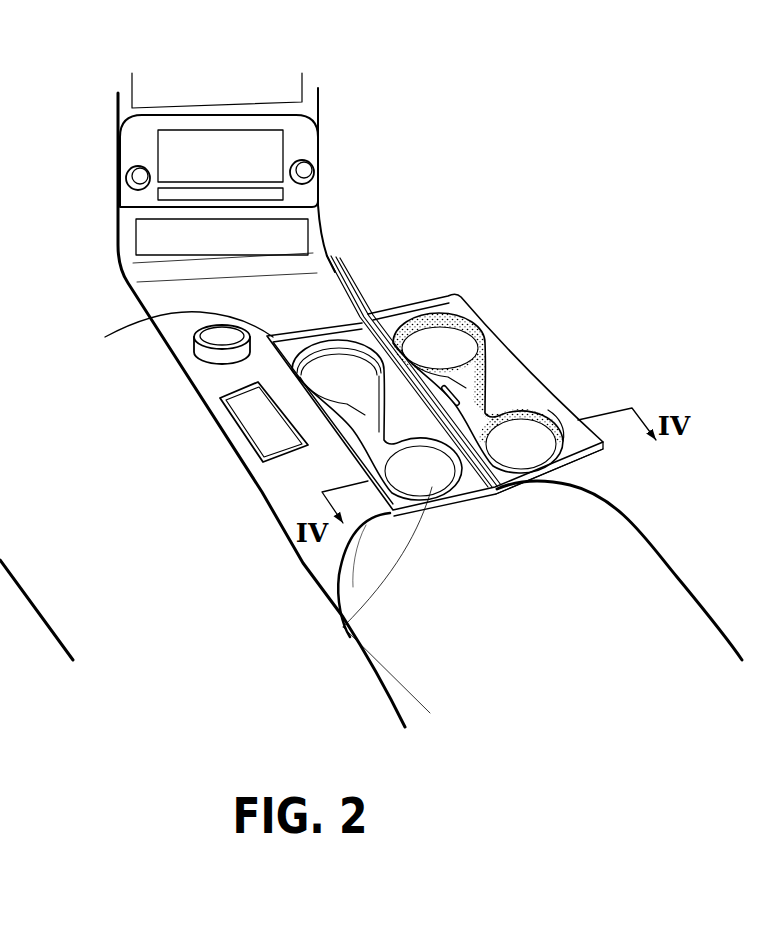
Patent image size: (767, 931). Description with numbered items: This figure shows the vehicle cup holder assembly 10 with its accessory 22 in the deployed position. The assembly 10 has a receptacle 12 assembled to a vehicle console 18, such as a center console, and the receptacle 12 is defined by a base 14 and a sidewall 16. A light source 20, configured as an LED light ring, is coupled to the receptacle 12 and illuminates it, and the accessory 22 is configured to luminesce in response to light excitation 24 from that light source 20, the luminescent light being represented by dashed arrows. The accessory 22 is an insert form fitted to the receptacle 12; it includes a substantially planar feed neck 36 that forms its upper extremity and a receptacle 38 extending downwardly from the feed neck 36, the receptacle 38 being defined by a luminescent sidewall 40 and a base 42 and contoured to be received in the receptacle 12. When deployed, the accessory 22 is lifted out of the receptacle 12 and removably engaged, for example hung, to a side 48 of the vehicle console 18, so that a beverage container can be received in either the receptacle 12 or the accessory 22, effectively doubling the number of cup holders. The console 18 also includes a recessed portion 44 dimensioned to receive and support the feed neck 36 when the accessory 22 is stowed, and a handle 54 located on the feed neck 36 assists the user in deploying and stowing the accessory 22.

The vehicle cup holder assembly 10 is at (556, 321).
The receptacle 12 is at (306, 329).
The base 14 is at (360, 415).
The sidewall 16 is at (367, 312).
The vehicle console 18 is at (183, 338).
The light source 20 is at (358, 410).
The accessory 22 is at (551, 362).
The light excitation 24 is at (345, 613).
The feed neck 36 is at (502, 352).
The receptacle 38 is at (423, 355).
The luminescent sidewall 40 is at (551, 410).
The base 42 is at (561, 461).
The recessed portion 44 is at (173, 333).
The side 48 is at (328, 393).
The handle 54 is at (443, 378).